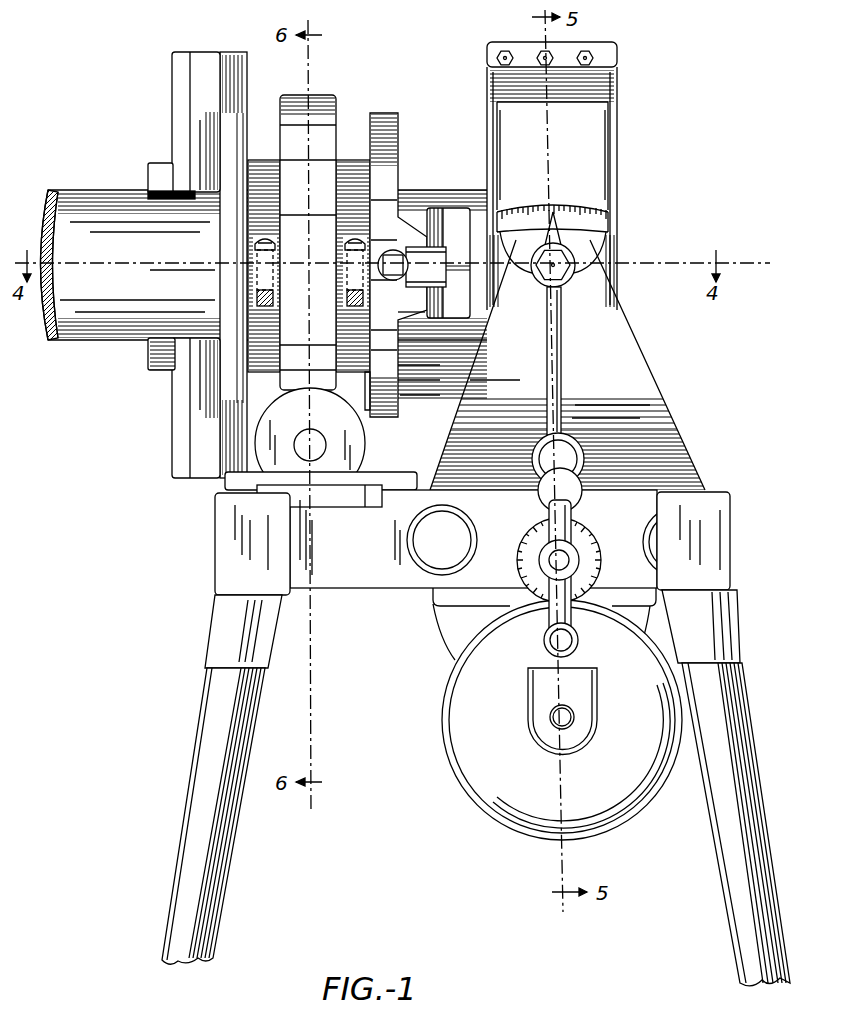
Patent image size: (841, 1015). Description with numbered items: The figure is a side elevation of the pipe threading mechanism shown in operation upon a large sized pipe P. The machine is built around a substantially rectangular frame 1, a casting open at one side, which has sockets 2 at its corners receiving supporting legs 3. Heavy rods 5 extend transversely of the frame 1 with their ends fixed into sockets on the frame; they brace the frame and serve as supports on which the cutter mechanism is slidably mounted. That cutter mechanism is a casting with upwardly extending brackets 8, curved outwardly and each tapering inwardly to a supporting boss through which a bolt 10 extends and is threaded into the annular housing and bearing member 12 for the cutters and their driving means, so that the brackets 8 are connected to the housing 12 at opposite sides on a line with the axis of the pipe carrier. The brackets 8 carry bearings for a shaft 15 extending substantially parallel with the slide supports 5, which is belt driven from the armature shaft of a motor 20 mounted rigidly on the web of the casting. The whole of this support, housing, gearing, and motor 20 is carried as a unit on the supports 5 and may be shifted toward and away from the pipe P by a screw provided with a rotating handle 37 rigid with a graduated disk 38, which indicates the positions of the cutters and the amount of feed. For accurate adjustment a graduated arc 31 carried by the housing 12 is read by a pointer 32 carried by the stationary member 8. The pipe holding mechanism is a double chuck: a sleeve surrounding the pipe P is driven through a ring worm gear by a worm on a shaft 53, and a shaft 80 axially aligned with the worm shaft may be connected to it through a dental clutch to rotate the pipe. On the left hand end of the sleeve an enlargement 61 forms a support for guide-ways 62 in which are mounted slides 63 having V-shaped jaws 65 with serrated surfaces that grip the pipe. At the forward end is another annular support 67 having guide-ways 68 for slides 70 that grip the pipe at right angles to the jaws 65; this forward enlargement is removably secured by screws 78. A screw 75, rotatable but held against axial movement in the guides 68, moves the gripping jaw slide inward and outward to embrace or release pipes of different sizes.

The frame 1 is at (352, 556).
The sockets 2 is at (210, 632).
The supporting legs 3 is at (190, 776).
The rods 5 is at (650, 528).
The brackets 8 is at (625, 368).
The bolt 10 is at (550, 285).
The annular housing and bearing member 12 is at (552, 176).
The shaft 15 is at (582, 466).
The motor 20 is at (562, 720).
The graduated arc 31 is at (553, 210).
The pointer 32 is at (600, 230).
The rotating handle 37 is at (545, 642).
The graduated disk 38 is at (590, 560).
The shaft 53 is at (310, 443).
The enlargement 61 is at (299, 242).
The guide-ways 62 is at (205, 62).
The slides 63 is at (173, 100).
The V-shaped jaws 65 is at (160, 190).
The annular support 67 is at (383, 175).
The guide-ways 68 is at (394, 251).
The slides 70 is at (426, 267).
The screw 75 is at (404, 299).
The screws 78 is at (448, 263).
The shaft 80 is at (440, 395).
The pipe P is at (118, 252).